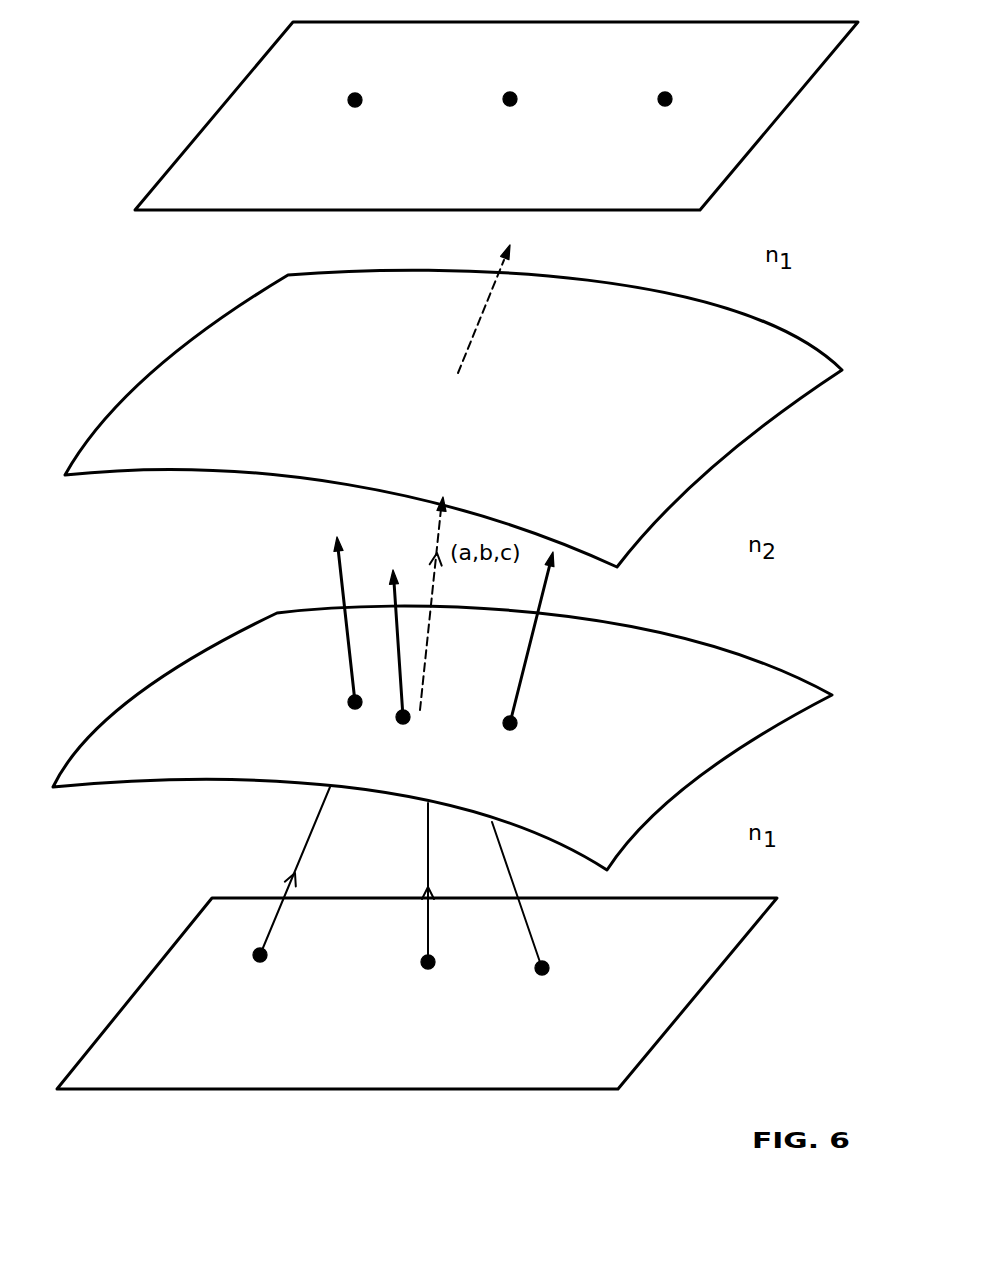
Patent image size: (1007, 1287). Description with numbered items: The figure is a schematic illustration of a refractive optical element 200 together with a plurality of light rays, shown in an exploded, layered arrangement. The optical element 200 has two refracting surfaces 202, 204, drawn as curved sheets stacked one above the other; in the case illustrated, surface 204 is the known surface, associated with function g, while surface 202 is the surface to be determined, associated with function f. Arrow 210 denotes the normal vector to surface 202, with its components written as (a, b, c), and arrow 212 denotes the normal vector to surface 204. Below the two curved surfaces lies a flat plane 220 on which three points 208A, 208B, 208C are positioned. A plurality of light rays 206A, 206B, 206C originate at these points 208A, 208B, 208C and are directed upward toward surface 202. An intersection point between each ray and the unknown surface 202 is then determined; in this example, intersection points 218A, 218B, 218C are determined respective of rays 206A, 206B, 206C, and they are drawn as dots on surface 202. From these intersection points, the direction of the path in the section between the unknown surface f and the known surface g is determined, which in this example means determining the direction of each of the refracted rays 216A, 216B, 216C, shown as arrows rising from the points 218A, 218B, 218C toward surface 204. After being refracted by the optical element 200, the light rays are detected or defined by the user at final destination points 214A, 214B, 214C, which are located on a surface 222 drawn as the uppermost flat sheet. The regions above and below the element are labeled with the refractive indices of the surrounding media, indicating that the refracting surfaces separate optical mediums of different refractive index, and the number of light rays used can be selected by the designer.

The refractive optical element 200 is at (165, 558).
The refracting surface 202 is at (287, 625).
The refracting surface 204 is at (702, 430).
The light ray 206A is at (525, 917).
The light ray 206B is at (427, 833).
The light ray 206C is at (278, 912).
The point 208A is at (541, 975).
The point 208B is at (428, 969).
The point 208C is at (259, 962).
The arrow 210 is at (434, 577).
The arrow 212 is at (487, 292).
The final destination point 214A is at (669, 96).
The final destination point 214B is at (516, 99).
The final destination point 214C is at (359, 104).
The refracted ray 216A is at (533, 633).
The refracted ray 216B is at (394, 587).
The refracted ray 216C is at (339, 557).
The intersection point 218A is at (510, 730).
The intersection point 218B is at (404, 724).
The intersection point 218C is at (349, 703).
The plane 220 is at (337, 1090).
The surface 222 is at (222, 105).